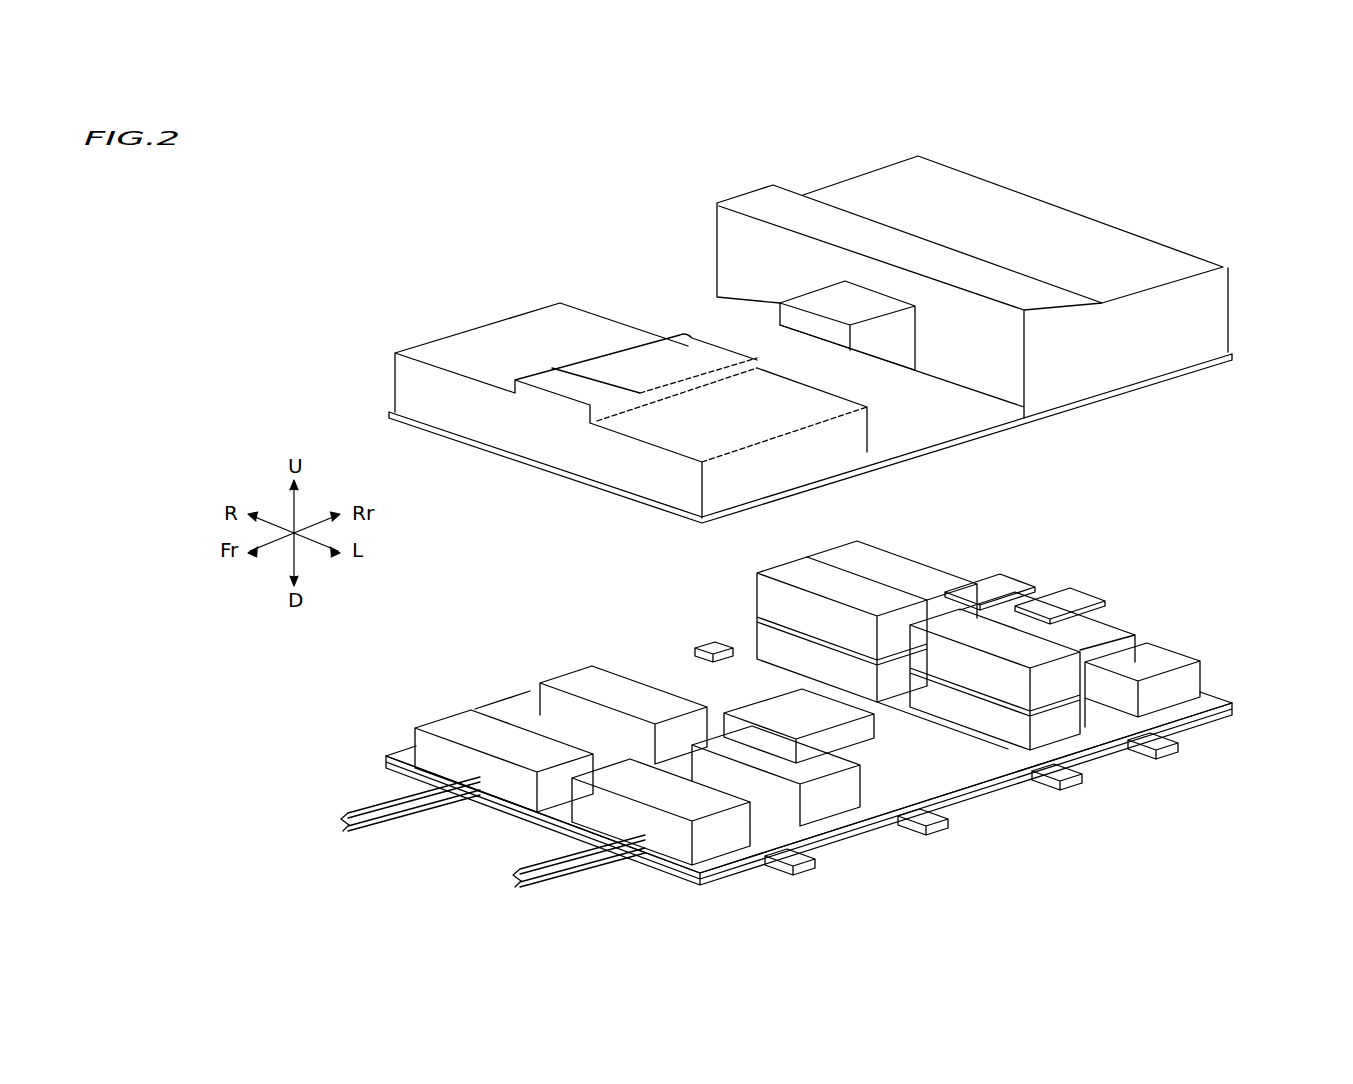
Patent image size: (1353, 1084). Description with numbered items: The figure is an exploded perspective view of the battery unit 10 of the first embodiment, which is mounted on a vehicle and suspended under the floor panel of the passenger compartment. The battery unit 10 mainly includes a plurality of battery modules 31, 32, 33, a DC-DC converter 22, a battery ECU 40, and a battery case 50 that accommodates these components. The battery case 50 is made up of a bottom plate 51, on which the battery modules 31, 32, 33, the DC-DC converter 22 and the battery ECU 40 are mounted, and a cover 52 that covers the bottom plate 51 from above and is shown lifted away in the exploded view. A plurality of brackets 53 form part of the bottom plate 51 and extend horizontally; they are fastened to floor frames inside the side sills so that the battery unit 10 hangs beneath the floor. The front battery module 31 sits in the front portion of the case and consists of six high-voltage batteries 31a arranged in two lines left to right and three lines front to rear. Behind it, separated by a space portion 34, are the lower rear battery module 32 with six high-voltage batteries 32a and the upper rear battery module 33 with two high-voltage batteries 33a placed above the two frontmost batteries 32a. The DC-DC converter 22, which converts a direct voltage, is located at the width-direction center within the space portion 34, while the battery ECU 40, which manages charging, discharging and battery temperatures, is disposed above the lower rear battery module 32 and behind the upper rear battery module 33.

The battery unit 10 is at (591, 219).
The DC-DC converter 22 is at (763, 710).
The front battery module 31 is at (575, 694).
The high-voltage battery 31a is at (620, 785).
The lower rear battery module 32 is at (1040, 612).
The high-voltage battery 32a is at (1010, 722).
The upper rear battery module 33 is at (875, 598).
The high-voltage battery 33a is at (770, 592).
The space portion 34 is at (950, 762).
The battery ECU 40 is at (1037, 603).
The battery case 50 is at (1280, 437).
The bottom plate 51 is at (1210, 688).
The cover 52 is at (1165, 347).
The bracket 53 is at (937, 828).